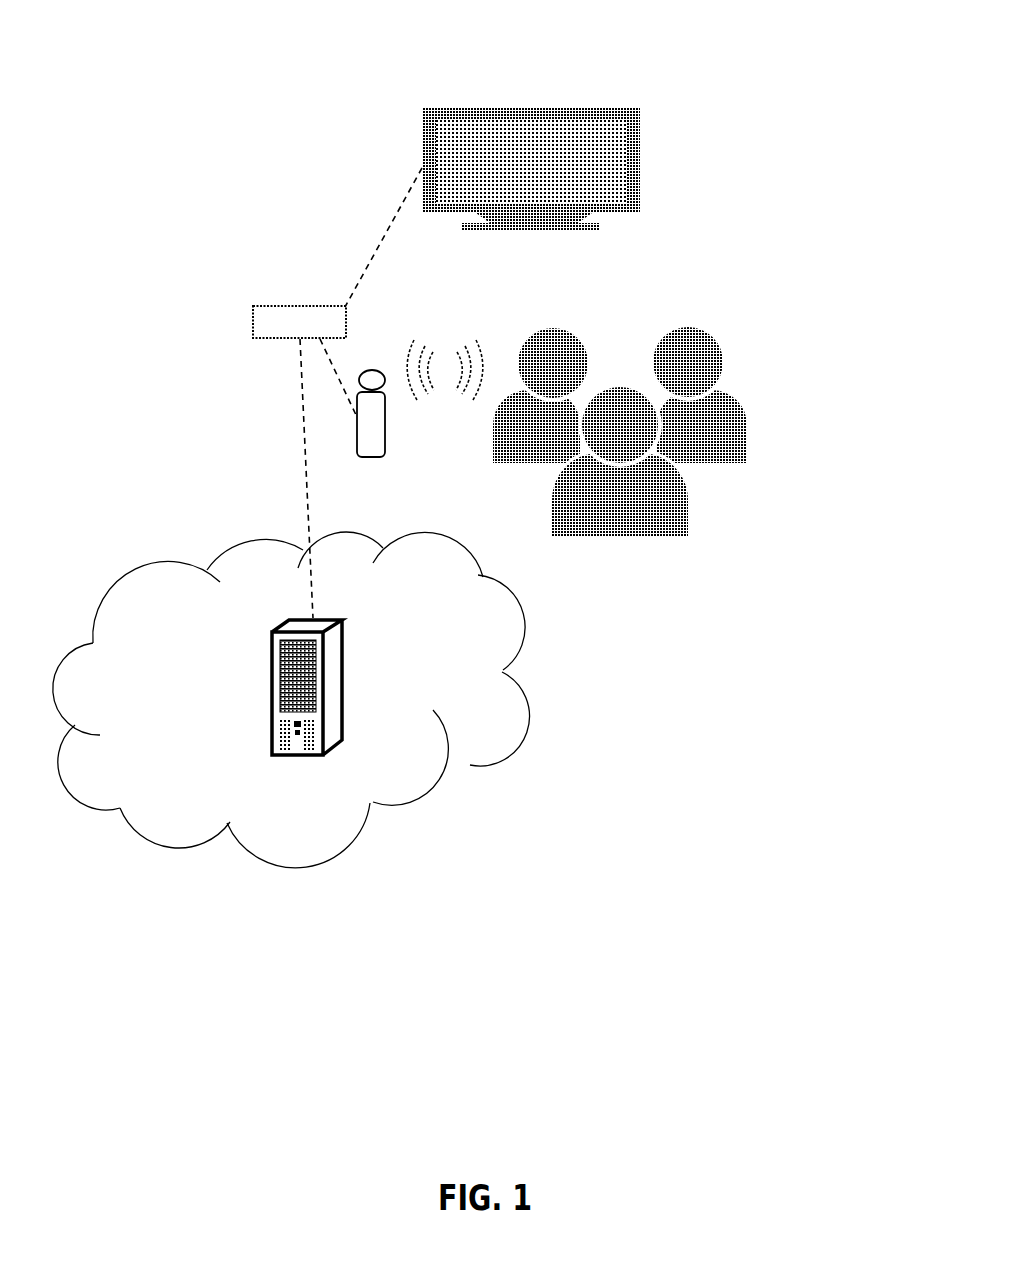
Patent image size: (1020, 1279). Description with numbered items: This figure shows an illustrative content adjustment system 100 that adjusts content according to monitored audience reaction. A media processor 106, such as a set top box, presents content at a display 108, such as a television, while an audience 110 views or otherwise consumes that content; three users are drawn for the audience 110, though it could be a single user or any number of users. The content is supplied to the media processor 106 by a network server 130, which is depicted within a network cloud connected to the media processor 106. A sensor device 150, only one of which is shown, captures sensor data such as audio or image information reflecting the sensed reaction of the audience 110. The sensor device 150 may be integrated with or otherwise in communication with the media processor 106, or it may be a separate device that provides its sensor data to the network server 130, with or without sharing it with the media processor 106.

The system 100 is at (517, 1170).
The media processor 106 is at (340, 334).
The display 108 is at (545, 105).
The audience 110 is at (760, 328).
The network server 130 is at (270, 693).
The sensor device 150 is at (367, 368).